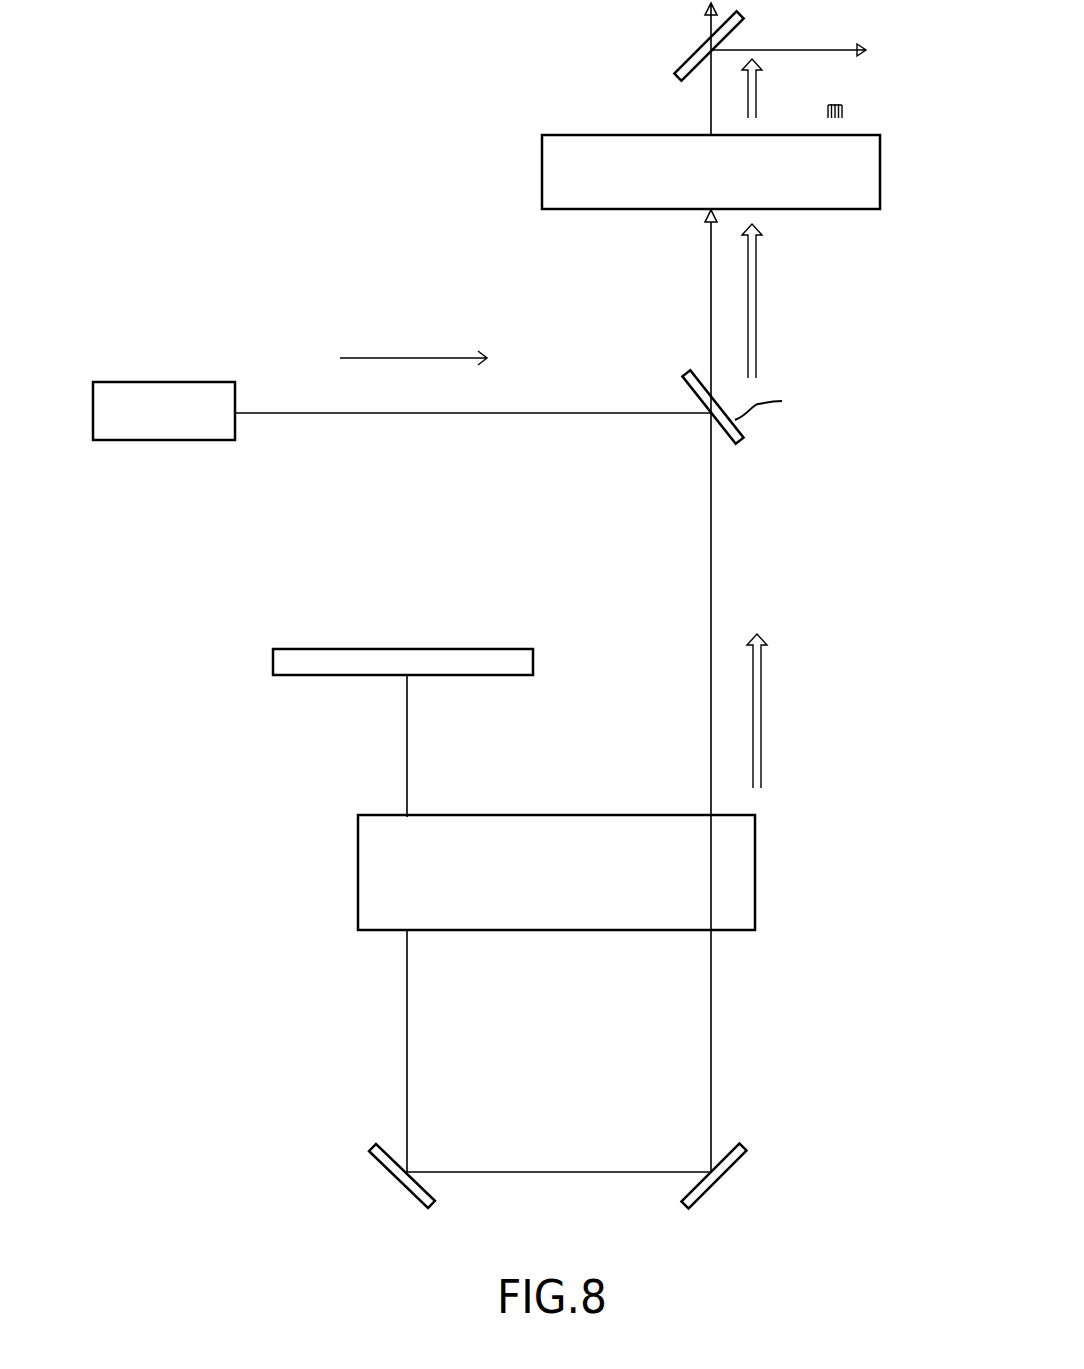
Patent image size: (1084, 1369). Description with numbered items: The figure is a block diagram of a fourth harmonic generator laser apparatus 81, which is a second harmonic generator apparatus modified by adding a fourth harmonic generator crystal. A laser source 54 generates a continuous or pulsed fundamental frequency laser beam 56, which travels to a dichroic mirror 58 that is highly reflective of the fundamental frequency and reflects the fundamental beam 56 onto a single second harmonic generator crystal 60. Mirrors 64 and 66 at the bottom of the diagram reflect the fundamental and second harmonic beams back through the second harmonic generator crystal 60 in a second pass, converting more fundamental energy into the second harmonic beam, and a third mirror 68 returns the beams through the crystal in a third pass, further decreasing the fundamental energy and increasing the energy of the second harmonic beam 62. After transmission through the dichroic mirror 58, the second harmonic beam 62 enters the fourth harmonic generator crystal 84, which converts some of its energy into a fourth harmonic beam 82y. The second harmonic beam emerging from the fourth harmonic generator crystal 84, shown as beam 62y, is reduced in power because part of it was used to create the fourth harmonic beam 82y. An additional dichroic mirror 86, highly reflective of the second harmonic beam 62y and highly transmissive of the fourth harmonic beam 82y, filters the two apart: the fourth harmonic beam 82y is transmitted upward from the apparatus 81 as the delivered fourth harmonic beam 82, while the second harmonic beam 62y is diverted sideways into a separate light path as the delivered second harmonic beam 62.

The laser source 54 is at (160, 380).
The fundamental frequency laser beam 56 is at (395, 358).
The dichroic mirror 58 is at (688, 378).
The second harmonic generator crystal 60 is at (755, 886).
The second harmonic beam 62 is at (788, 50).
The second harmonic beam emerging from the FHG crystal 62y is at (757, 104).
The mirror 64 is at (733, 1168).
The mirror 66 is at (405, 1185).
The third mirror 68 is at (534, 665).
The fourth harmonic generator laser apparatus 81 is at (254, 1082).
The fourth harmonic beam 82 is at (711, 28).
The fourth harmonic beam 82y is at (840, 105).
The fourth harmonic generator crystal 84 is at (881, 186).
The additional dichroic mirror 86 is at (684, 67).